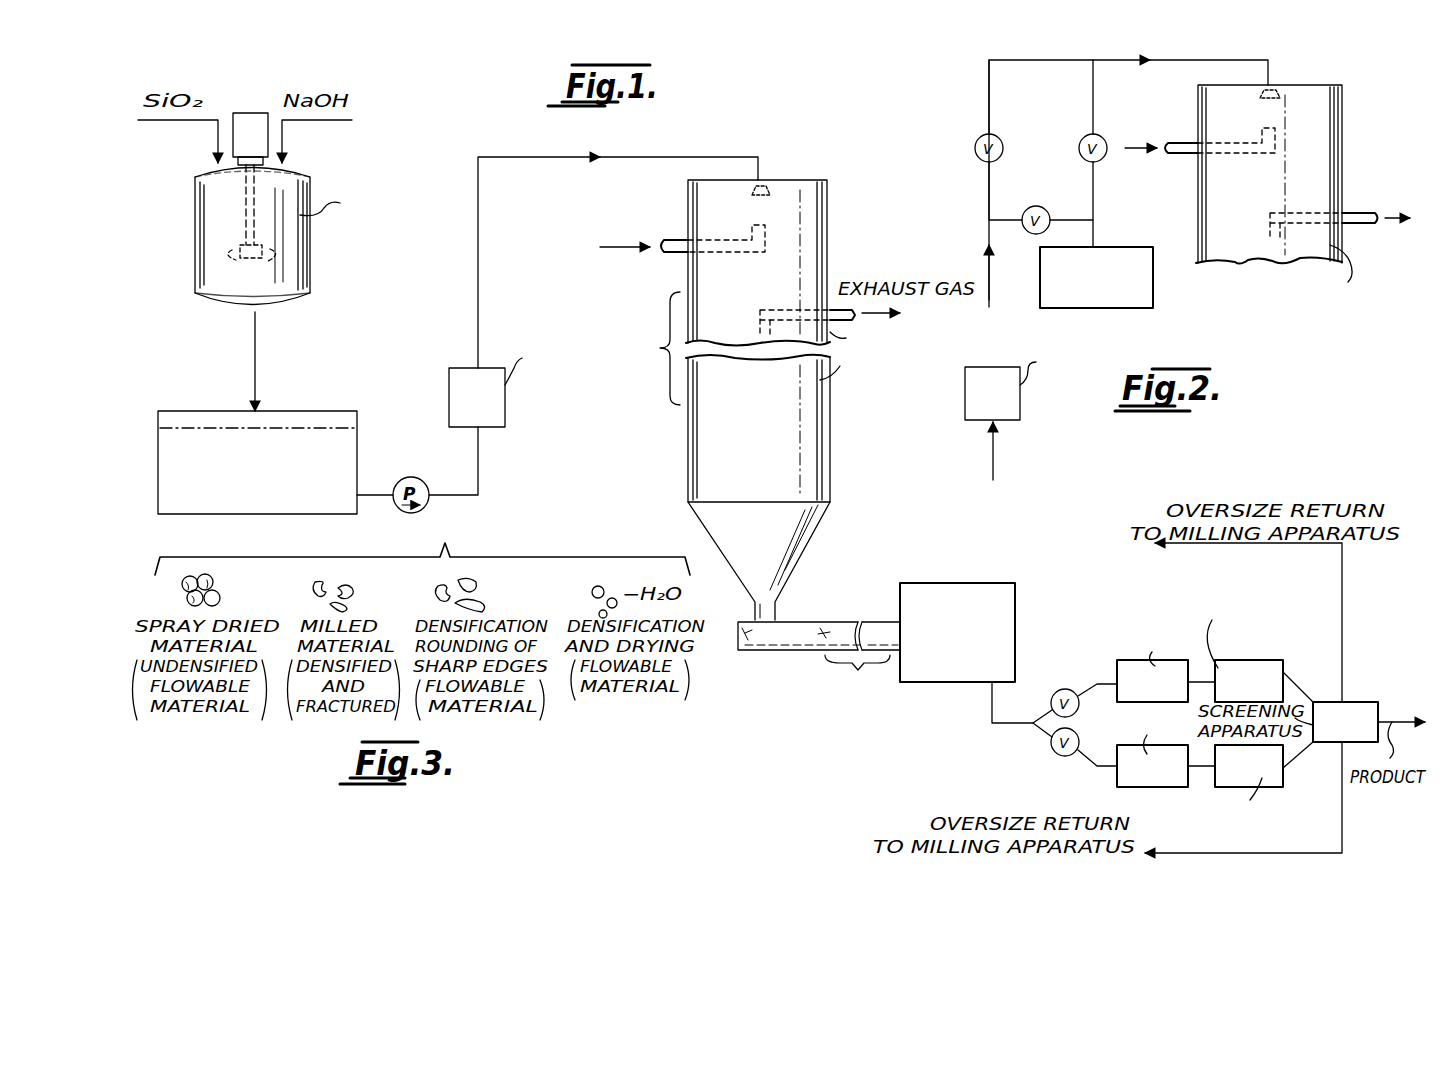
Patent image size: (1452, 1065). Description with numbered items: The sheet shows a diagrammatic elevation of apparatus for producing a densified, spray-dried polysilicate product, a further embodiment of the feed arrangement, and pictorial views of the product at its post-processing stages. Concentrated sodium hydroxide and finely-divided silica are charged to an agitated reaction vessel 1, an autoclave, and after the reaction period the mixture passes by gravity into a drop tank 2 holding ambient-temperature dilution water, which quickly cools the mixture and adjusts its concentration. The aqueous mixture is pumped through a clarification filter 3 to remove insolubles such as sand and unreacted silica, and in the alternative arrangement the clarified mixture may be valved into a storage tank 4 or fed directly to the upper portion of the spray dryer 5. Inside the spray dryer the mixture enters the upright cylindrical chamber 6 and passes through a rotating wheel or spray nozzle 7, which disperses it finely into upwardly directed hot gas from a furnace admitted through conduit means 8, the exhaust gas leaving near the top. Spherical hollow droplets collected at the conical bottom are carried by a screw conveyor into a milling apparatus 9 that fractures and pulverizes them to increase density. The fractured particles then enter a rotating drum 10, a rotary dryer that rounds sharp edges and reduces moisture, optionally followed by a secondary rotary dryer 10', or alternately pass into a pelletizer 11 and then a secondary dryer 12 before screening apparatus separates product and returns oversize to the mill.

In FIG. 1, the agitated reaction vessel 1 is at (310, 233).
In FIG. 1, the drop tank 2 is at (357, 432).
In FIG. 1, the clarification filter 3 is at (449, 386).
In FIG. 2, the clarification filter 3 is at (1010, 420).
In FIG. 2, the storage tank 4 is at (1140, 280).
In FIG. 1, the spray dryer 5 is at (766, 176).
In FIG. 2, the spray dryer 5 is at (1286, 78).
In FIG. 1, the cylindrical chamber 6 is at (827, 218).
In FIG. 2, the cylindrical chamber 6 is at (1342, 140).
In FIG. 1, the spray nozzle 7 is at (770, 192).
In FIG. 2, the spray nozzle 7 is at (1280, 96).
In FIG. 1, the conduit means 8 is at (672, 255).
In FIG. 2, the conduit means 8 is at (1175, 140).
In FIG. 1, the milling apparatus 9 is at (900, 584).
In FIG. 1, the rotating drum 10 is at (1132, 657).
In FIG. 1, the secondary rotary dryer 10' is at (1268, 645).
In FIG. 1, the pelletizer 11 is at (1120, 770).
In FIG. 1, the secondary dryer 12 is at (1278, 772).